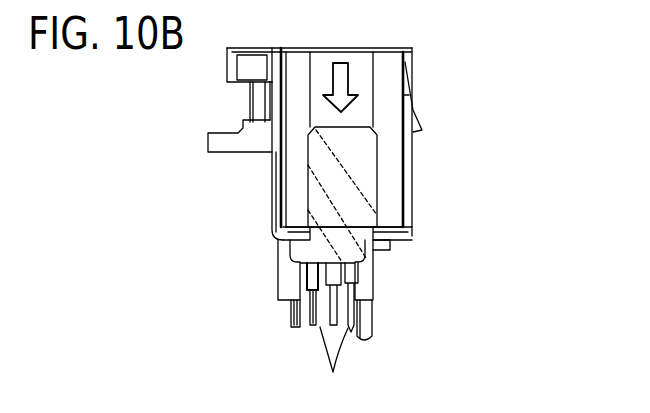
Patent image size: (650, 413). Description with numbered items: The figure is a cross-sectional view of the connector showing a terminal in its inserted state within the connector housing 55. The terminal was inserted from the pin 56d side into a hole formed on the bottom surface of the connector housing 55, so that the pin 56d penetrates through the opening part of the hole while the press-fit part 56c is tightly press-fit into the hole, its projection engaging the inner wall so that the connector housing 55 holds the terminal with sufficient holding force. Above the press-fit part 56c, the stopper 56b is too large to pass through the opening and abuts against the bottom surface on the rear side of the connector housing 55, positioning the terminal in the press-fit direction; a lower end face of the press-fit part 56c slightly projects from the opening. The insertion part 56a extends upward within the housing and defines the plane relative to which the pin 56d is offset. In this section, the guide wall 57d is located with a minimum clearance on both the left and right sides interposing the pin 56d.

The connector housing 55 is at (408, 63).
The insertion part 56a is at (372, 165).
The stopper 56b is at (380, 243).
The press-fit part 56c is at (390, 248).
The pin 56d is at (335, 364).
The guide wall 57d is at (312, 270).